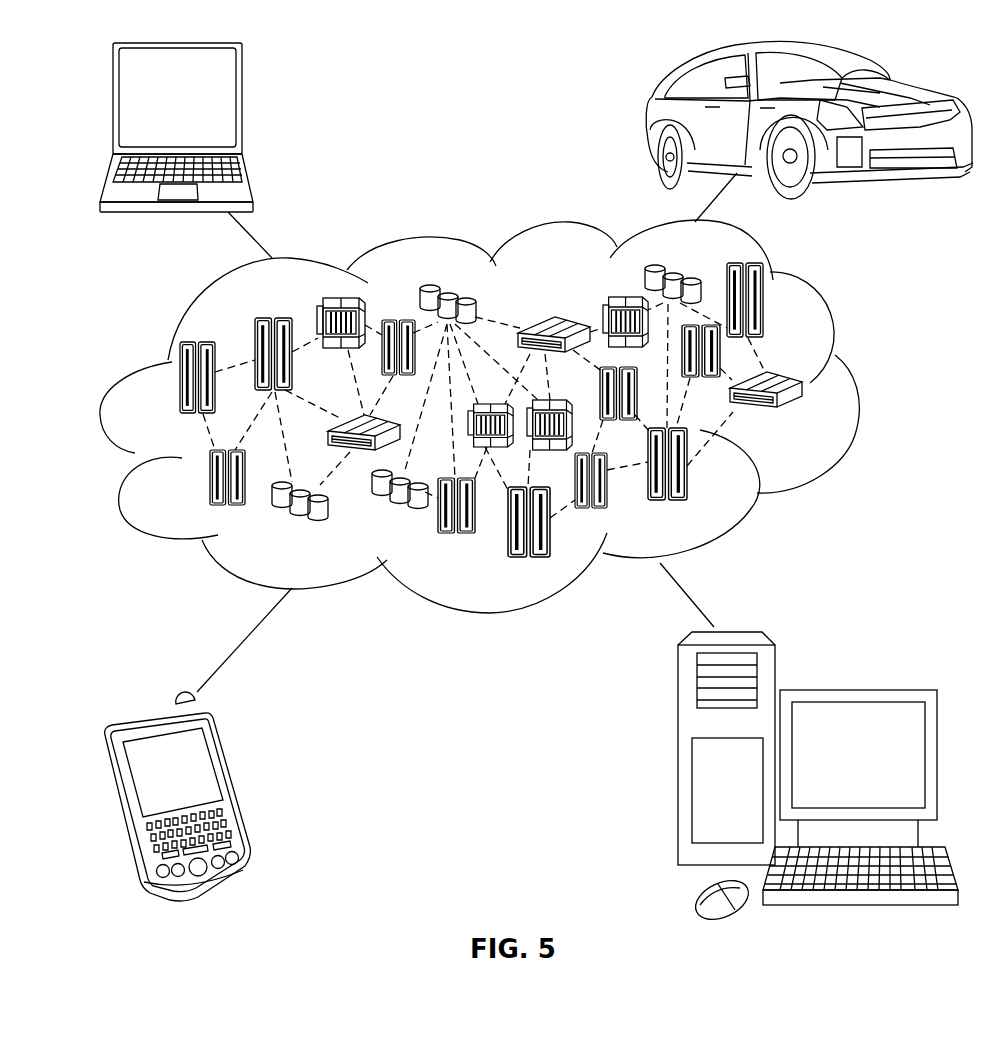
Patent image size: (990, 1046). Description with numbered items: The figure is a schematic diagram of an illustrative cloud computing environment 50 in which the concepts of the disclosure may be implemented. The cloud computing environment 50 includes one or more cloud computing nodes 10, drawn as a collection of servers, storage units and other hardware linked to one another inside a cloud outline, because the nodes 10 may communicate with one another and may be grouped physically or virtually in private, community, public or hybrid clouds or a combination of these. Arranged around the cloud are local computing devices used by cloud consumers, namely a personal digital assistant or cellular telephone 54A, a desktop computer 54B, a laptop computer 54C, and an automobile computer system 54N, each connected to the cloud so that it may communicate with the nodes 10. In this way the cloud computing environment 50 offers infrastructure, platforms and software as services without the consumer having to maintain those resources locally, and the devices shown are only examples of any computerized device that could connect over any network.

The cloud computing node 10 is at (803, 423).
The cloud computing environment 50 is at (858, 385).
The personal digital assistant or cellular telephone 54A is at (233, 788).
The desktop computer 54B is at (857, 688).
The laptop computer 54C is at (242, 105).
The automobile computer system 54N is at (650, 118).